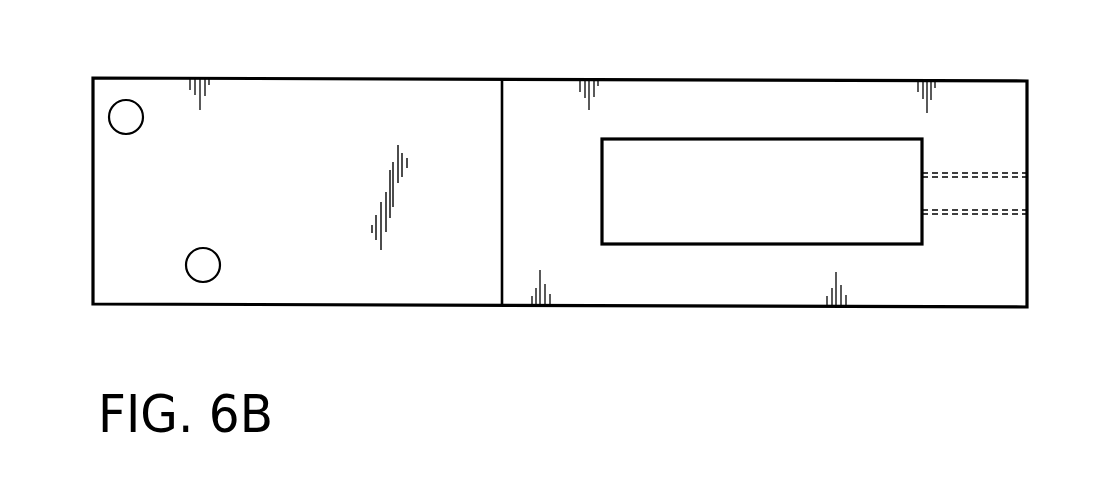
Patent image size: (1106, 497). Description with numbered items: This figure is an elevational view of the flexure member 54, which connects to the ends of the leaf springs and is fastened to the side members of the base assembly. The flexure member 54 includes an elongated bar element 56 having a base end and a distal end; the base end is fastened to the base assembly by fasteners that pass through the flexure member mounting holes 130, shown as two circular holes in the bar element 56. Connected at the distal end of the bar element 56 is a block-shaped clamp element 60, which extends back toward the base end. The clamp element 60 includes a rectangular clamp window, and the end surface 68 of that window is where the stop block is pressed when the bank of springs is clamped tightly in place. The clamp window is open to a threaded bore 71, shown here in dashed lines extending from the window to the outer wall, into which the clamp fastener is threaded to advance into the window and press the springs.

The flexure member 54 is at (264, 74).
The bar element 56 is at (378, 88).
The clamp element 60 is at (684, 90).
The end surface 68 is at (605, 218).
The threaded bore 71 is at (1012, 178).
The flexure member mounting holes 130 is at (189, 261).